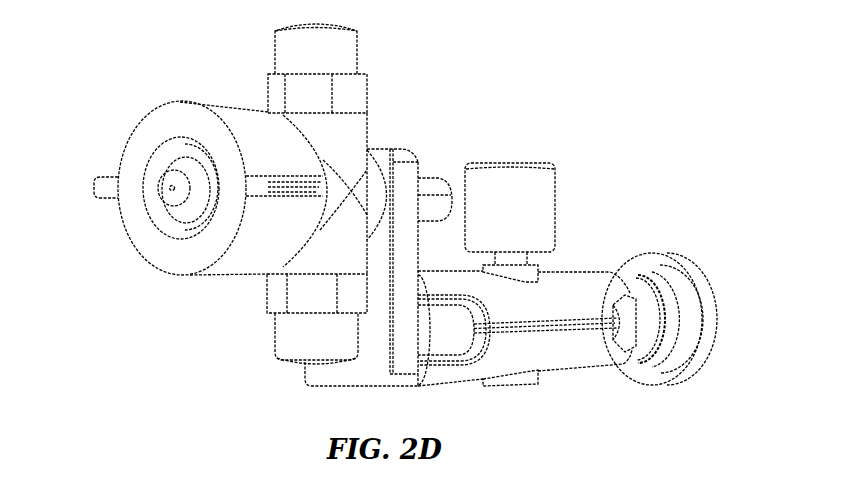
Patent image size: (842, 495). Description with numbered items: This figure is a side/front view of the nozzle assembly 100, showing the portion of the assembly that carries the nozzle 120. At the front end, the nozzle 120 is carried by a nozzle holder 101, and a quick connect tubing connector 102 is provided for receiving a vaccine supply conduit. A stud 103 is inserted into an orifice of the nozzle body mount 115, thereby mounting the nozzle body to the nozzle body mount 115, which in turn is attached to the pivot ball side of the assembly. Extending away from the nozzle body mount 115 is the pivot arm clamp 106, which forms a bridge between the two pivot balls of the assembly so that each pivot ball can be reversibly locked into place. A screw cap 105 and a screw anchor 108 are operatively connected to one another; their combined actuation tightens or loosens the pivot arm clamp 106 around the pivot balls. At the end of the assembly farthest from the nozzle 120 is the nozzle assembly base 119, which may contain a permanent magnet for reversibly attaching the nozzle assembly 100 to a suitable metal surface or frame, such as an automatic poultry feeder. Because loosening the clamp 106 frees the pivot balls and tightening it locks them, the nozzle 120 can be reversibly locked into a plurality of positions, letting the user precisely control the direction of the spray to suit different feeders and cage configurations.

The nozzle assembly 100 is at (227, 54).
The nozzle holder 101 is at (176, 265).
The quick connect tubing connector 102 is at (336, 47).
The stud 103 is at (435, 188).
The screw cap 105 is at (513, 187).
The pivot arm clamp 106 is at (568, 300).
The screw anchor 108 is at (515, 386).
The nozzle body mount 115 is at (402, 187).
The nozzle assembly base 119 is at (670, 273).
The nozzle 120 is at (177, 167).